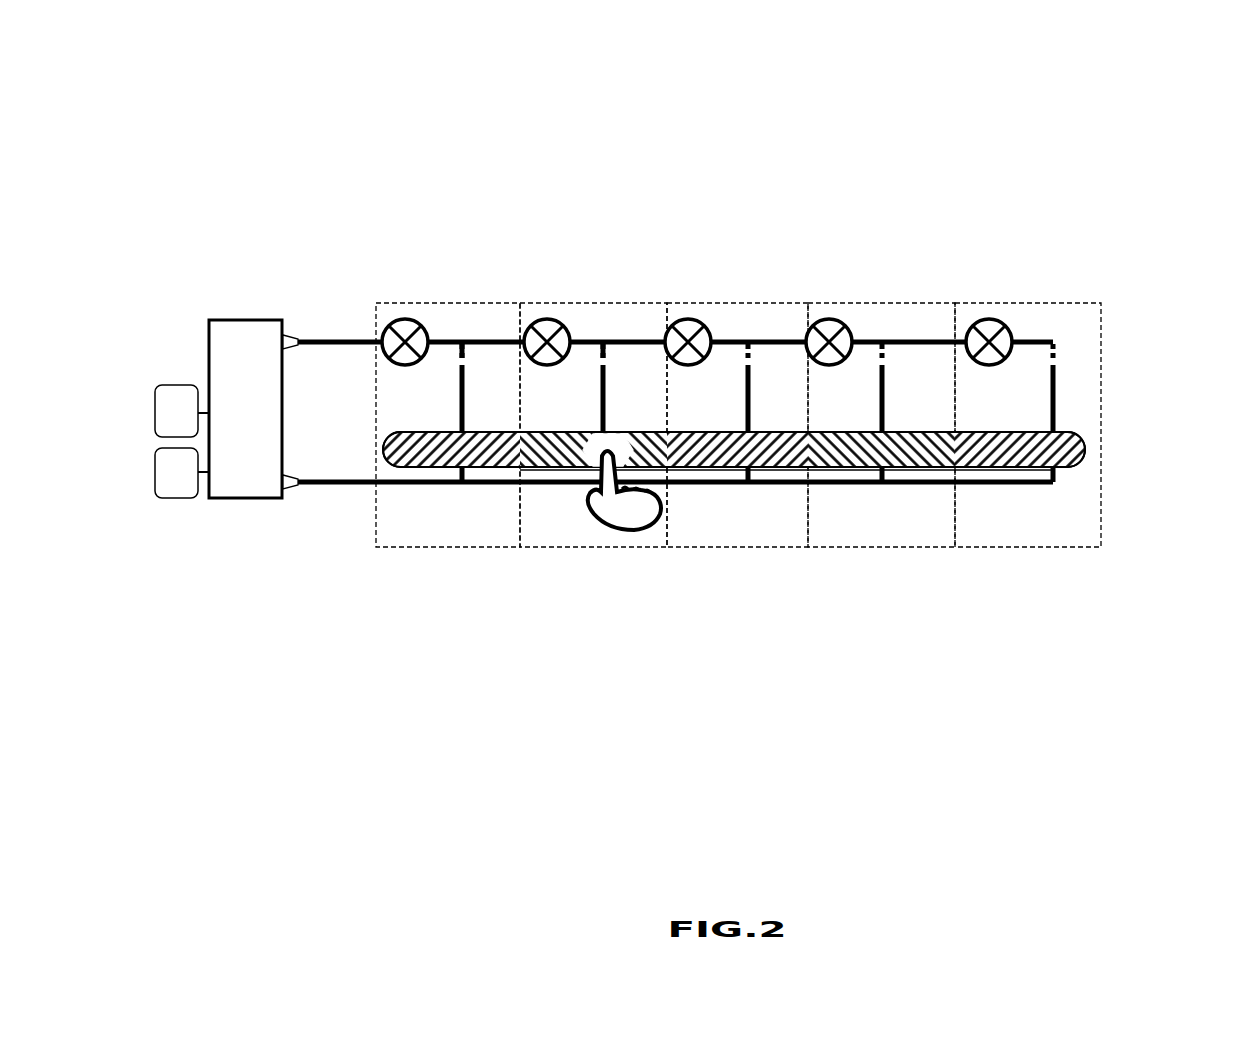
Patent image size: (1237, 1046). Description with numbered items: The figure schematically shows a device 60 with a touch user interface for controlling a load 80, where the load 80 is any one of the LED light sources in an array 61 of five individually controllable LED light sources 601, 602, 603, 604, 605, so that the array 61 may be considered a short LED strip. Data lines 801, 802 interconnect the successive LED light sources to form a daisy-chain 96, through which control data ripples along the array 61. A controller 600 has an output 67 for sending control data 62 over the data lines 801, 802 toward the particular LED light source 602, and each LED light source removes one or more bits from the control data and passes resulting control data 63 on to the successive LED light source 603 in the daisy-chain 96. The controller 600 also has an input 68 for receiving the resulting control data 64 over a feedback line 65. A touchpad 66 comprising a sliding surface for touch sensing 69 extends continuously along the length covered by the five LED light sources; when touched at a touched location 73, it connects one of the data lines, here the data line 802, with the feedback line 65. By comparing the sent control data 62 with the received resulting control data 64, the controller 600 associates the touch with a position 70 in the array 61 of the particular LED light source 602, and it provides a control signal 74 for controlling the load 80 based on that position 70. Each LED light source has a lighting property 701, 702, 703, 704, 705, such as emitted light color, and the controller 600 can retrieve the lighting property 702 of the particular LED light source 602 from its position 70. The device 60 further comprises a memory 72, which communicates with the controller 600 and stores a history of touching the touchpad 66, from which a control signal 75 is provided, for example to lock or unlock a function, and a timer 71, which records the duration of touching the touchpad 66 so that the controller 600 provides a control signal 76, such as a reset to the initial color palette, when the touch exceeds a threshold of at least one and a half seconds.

The device 60 is at (636, 166).
The array of individually controllable LED light sources 61 is at (802, 378).
The daisy-chain 96 is at (802, 378).
The load 80 is at (1069, 286).
The control data 62 is at (344, 333).
The resulting control data 63 is at (446, 358).
The received resulting control data 64 is at (350, 489).
The feedback line 65 is at (428, 487).
The touchpad 66 is at (800, 509).
The sliding surface for touch sensing 69 is at (1090, 447).
The output 67 is at (294, 353).
The input 68 is at (296, 473).
The position 70 is at (655, 547).
The timer 71 is at (177, 487).
The memory 72 is at (183, 388).
The touched location 73 is at (598, 448).
The control signal 74 is at (206, 380).
The control signal 75 is at (206, 380).
The control signal 76 is at (262, 336).
The controller 600 is at (245, 464).
The first LED light source 601 is at (403, 305).
The second LED light source 602 is at (547, 305).
The third LED light source 603 is at (683, 305).
The fourth LED light source 604 is at (826, 305).
The fifth LED light source 605 is at (988, 305).
The lighting property 701 is at (404, 278).
The lighting property 702 is at (547, 278).
The lighting property 703 is at (685, 278).
The lighting property 704 is at (827, 278).
The lighting property 705 is at (988, 278).
The data line 801 is at (475, 337).
The data line 802 is at (617, 337).